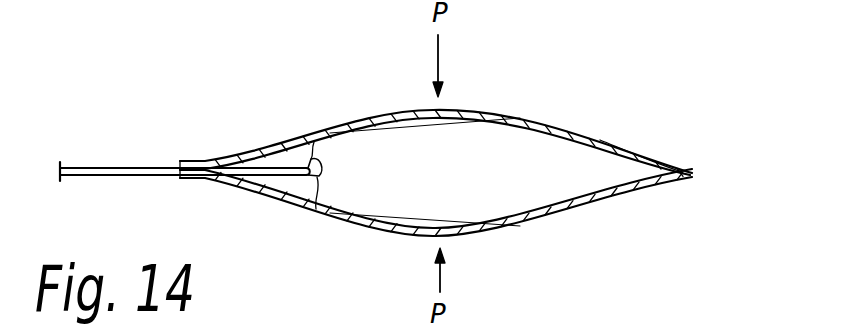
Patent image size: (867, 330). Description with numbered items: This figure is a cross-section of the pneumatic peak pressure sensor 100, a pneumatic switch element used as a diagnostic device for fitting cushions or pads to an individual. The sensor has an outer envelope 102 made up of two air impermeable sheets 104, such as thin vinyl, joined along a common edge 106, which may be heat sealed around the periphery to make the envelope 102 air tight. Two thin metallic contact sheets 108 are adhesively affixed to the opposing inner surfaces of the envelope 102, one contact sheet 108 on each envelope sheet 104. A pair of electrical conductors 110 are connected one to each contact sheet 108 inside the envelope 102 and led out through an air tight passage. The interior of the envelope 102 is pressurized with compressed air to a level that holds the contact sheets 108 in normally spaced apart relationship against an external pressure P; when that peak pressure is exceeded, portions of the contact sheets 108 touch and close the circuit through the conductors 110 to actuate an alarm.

The pneumatic peak pressure sensor 100 is at (555, 110).
The outer envelope 102 is at (640, 152).
The air impermeable sheets 104 is at (292, 134).
The common edge 106 is at (222, 200).
The contact sheets 108 is at (430, 120).
The electrical conductors 110 is at (322, 164).